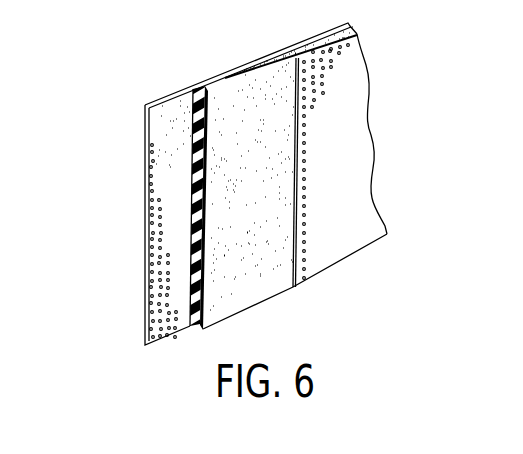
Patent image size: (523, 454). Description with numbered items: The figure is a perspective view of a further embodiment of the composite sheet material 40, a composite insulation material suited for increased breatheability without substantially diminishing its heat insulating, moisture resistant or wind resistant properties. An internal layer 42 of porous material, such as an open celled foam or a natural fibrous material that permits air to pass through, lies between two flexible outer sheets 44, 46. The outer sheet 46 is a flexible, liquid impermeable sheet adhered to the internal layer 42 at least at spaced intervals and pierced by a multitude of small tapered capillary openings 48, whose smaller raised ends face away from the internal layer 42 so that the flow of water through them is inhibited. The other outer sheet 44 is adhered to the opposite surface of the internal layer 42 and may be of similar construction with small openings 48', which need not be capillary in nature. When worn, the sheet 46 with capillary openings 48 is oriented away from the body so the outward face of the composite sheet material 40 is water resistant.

The composite sheet material 40 is at (135, 97).
The internal layer 42 is at (243, 113).
The outer sheet 44 is at (176, 147).
The liquid impermeable sheet 46 is at (363, 152).
The capillary openings 48 is at (375, 162).
The openings 48' is at (123, 241).